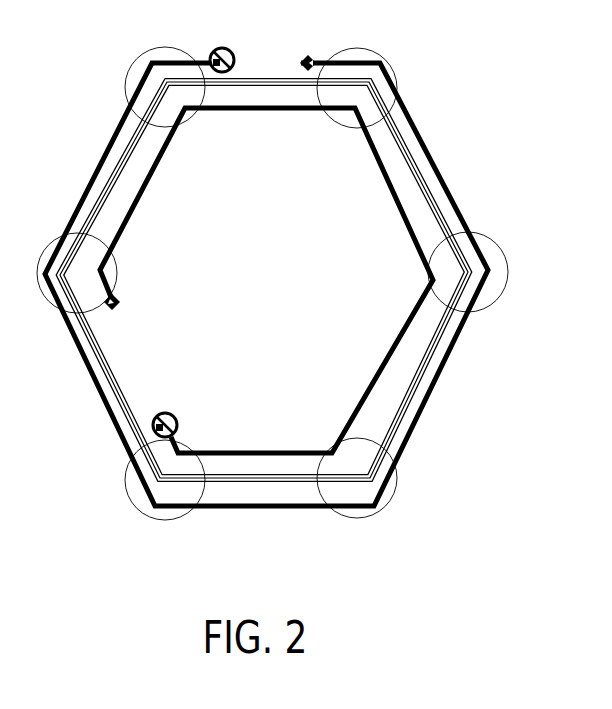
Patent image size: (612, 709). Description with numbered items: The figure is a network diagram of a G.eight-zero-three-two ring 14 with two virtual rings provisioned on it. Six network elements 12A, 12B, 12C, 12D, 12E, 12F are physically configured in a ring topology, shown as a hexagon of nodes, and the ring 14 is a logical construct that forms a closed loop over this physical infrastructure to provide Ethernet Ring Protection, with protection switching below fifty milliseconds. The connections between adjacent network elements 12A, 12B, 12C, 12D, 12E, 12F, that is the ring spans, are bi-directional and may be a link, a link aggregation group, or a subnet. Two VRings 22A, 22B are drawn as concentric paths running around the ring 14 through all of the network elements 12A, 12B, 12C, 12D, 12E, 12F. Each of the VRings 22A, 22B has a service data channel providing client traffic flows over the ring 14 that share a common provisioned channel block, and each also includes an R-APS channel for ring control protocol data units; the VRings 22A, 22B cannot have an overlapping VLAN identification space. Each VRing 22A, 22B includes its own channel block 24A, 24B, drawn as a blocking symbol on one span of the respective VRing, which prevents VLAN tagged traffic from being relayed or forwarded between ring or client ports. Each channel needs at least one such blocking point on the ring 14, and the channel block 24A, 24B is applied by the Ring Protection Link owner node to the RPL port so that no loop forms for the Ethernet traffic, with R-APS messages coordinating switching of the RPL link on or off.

The network element 12A is at (149, 98).
The network element 12B is at (336, 98).
The network element 12C is at (445, 286).
The network element 12D is at (335, 490).
The network element 12E is at (153, 490).
The network element 12F is at (58, 286).
The ring 14 is at (252, 266).
The virtual ring (VRing) 22A is at (446, 182).
The virtual ring (VRing) 22B is at (372, 147).
The channel block 24A is at (221, 49).
The channel block 24B is at (173, 417).